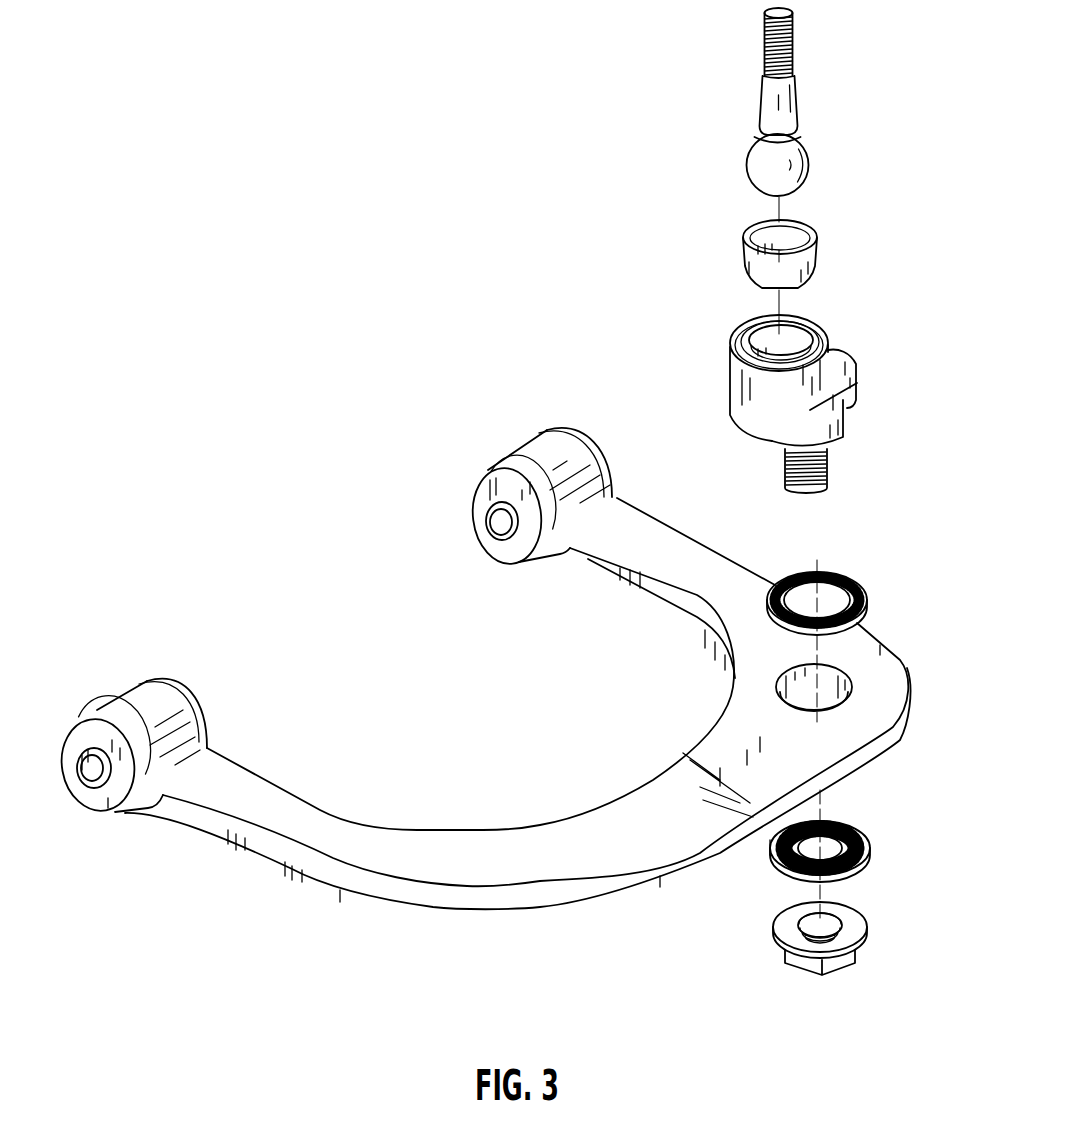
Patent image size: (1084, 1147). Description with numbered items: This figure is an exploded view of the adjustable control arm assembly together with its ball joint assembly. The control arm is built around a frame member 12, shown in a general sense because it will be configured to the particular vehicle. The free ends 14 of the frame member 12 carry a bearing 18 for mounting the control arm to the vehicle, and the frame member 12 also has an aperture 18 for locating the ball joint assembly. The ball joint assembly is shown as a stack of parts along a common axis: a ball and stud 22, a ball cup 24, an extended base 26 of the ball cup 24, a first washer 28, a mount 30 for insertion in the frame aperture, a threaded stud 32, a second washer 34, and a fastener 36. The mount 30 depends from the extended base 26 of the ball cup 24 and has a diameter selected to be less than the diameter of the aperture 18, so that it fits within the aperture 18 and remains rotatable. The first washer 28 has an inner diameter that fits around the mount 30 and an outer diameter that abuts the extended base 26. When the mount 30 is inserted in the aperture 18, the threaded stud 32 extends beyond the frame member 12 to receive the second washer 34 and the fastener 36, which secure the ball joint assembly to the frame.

The frame member 12 is at (606, 826).
The free end 14 is at (512, 445).
The bearing 18 is at (821, 698).
The ball and stud 22 is at (797, 107).
The ball cup 24 is at (718, 222).
The extended base 26 is at (843, 372).
The first washer 28 is at (850, 580).
The mount 30 is at (842, 427).
The threaded stud 32 is at (830, 467).
The second washer 34 is at (858, 832).
The fastener 36 is at (853, 932).